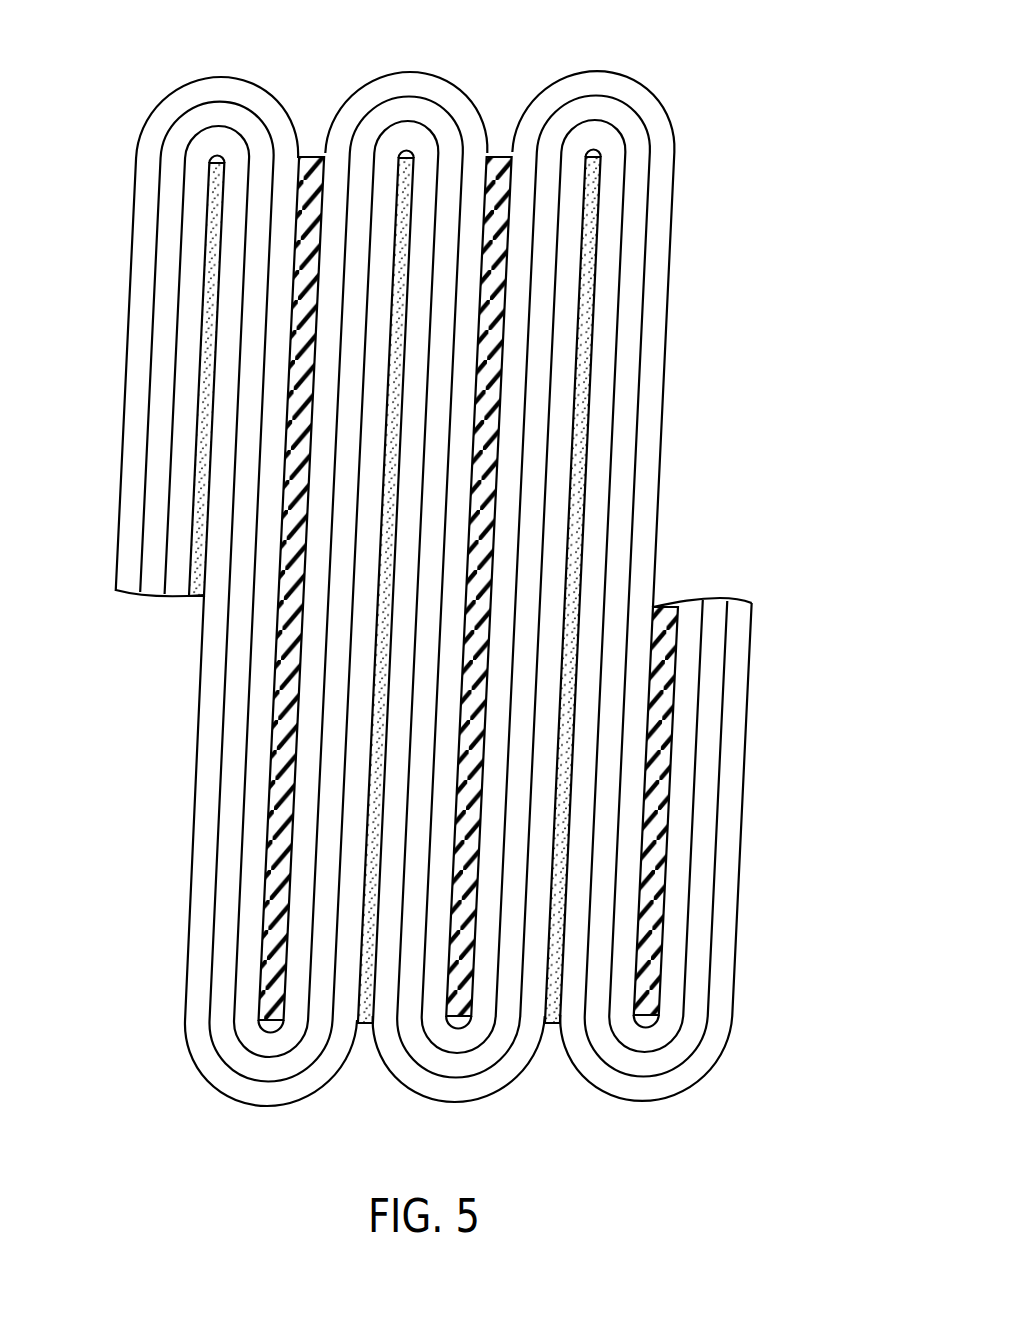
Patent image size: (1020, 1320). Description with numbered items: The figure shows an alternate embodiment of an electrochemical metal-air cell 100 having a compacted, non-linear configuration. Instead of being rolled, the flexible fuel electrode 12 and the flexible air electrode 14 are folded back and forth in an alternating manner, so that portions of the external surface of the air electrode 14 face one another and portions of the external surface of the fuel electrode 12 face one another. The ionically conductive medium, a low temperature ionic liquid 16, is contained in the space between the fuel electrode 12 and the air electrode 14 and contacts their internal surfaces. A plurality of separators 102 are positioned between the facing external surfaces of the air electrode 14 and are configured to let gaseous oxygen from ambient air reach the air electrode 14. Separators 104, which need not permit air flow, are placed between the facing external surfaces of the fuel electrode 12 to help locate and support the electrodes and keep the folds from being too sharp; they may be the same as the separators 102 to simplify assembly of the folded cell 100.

The cell 100 is at (812, 111).
The flexible fuel electrode 12 is at (222, 93).
The flexible air electrode 14 is at (218, 660).
The low temperature ionic liquid 16 is at (393, 117).
The separators 102 is at (205, 362).
The separators 104 is at (307, 240).